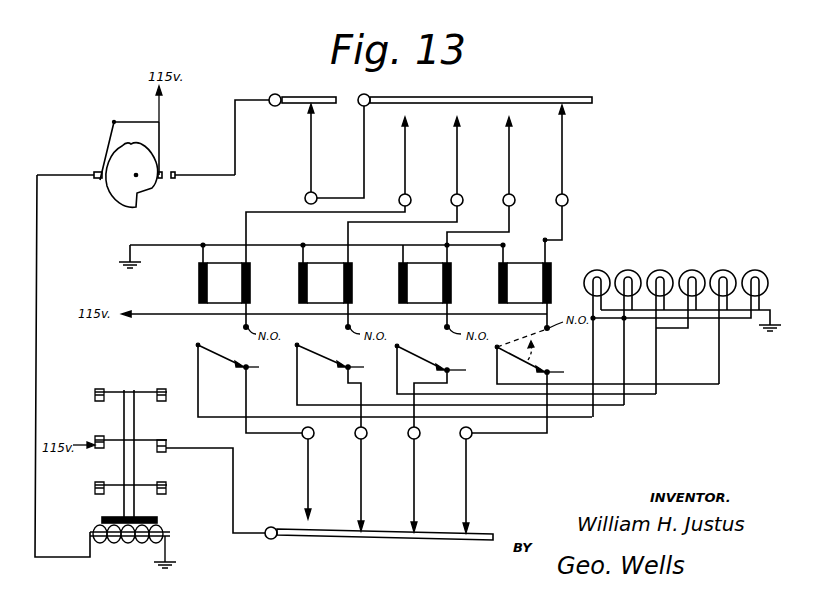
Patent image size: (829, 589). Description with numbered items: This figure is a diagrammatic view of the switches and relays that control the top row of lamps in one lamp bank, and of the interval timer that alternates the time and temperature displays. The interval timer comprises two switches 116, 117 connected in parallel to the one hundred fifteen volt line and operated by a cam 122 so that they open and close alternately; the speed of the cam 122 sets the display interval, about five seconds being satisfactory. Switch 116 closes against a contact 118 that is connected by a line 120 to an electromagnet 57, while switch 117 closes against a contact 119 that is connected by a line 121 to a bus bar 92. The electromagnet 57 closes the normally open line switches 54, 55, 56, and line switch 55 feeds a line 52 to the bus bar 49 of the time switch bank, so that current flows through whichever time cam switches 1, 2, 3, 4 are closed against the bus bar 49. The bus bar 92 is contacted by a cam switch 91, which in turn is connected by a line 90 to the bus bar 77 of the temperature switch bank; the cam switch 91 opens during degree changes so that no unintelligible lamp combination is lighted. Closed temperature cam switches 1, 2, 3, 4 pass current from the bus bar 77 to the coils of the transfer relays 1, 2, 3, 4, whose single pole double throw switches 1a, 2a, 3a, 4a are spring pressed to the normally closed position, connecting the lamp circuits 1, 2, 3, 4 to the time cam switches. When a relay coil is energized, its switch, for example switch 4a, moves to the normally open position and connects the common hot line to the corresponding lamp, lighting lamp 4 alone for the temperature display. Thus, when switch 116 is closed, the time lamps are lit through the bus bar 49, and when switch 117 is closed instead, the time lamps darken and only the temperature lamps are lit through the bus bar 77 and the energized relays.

The switch 116 is at (113, 125).
The switch 117 is at (161, 126).
The contact 118 is at (98, 181).
The contact 119 is at (177, 172).
The line 120 is at (36, 282).
The line 121 is at (236, 141).
The cam 122 is at (150, 192).
The bus bar 92 is at (319, 98).
The cam switch 91 is at (310, 163).
The bus bar 77 is at (470, 100).
The line 90 is at (363, 138).
The cam switch / relay / lamp circuit 1 is at (406, 163).
The cam switch / relay / lamp circuit 2 is at (458, 163).
The cam switch / relay / lamp circuit 3 is at (510, 163).
The cam switch / relay / lamp circuit 4 is at (563, 163).
The relay switch 1a is at (226, 360).
The relay switch 2a is at (327, 360).
The relay switch 3a is at (428, 361).
The relay switch 4a is at (540, 360).
The line 52 is at (234, 497).
The bus bar 49 is at (410, 536).
The line switch 54 is at (140, 391).
The line switch 55 is at (145, 440).
The line switch 56 is at (148, 486).
The electromagnet 57 is at (168, 545).